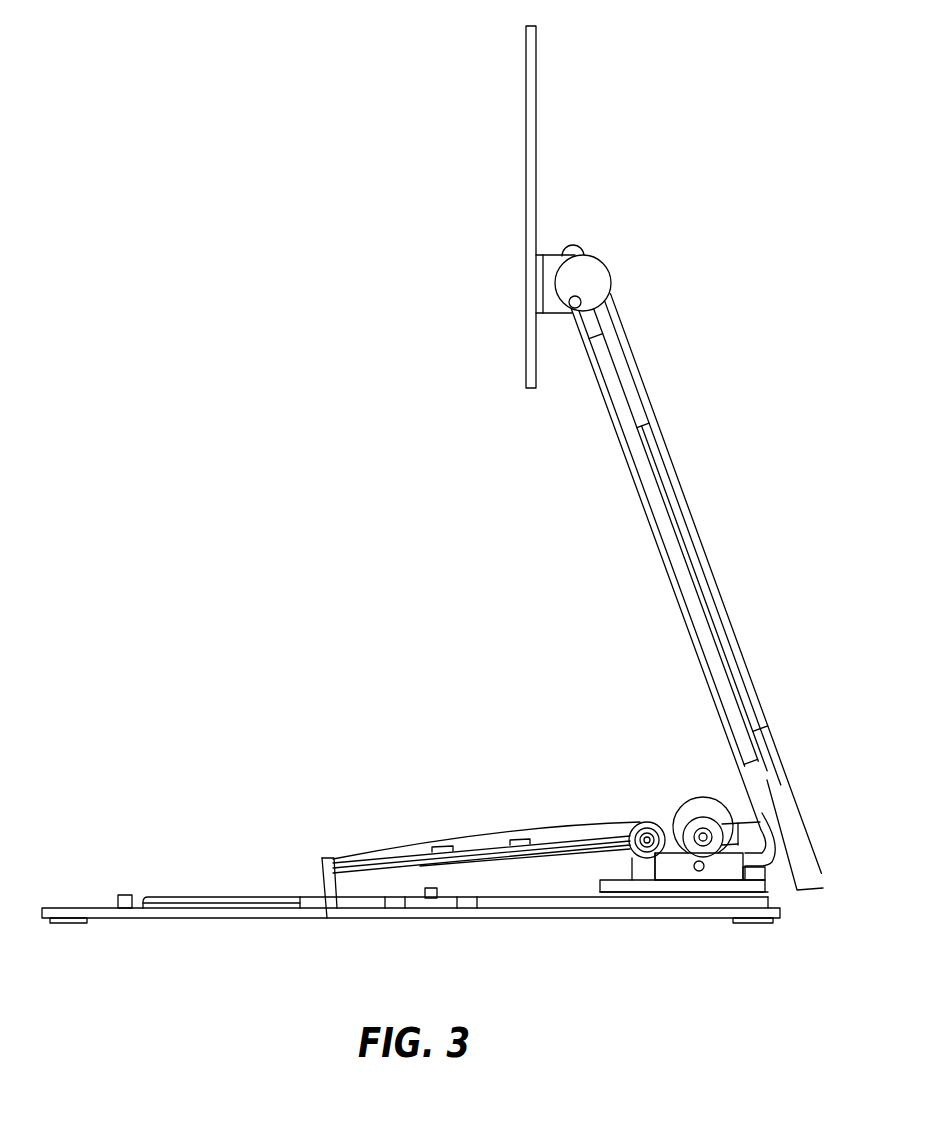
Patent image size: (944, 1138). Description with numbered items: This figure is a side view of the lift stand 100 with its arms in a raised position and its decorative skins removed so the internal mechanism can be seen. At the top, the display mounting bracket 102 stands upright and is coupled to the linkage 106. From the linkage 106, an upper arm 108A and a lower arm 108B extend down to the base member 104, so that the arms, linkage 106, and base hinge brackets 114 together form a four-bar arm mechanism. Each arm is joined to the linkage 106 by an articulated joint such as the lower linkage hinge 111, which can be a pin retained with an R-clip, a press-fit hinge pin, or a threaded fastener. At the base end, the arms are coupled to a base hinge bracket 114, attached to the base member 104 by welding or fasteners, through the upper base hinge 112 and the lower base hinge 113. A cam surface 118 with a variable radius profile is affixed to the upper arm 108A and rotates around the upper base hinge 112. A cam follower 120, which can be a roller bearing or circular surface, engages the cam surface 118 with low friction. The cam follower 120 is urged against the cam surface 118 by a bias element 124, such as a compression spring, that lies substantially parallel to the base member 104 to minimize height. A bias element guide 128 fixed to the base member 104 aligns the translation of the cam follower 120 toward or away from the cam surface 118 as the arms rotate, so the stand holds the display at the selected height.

The lift stand 100 is at (207, 291).
The display mounting bracket 102 is at (525, 130).
The base member 104 is at (470, 918).
The linkage 106 is at (607, 268).
The upper arm 108A is at (638, 390).
The lower arm 108B is at (770, 806).
The lower linkage hinge 111 is at (575, 304).
The upper base hinge 112 is at (706, 842).
The lower base hinge 113 is at (697, 872).
The base hinge bracket 114 is at (665, 868).
The cam surface 118 is at (703, 800).
The cam follower 120 is at (640, 823).
The bias element 124 is at (445, 840).
The bias element guide 128 is at (380, 888).